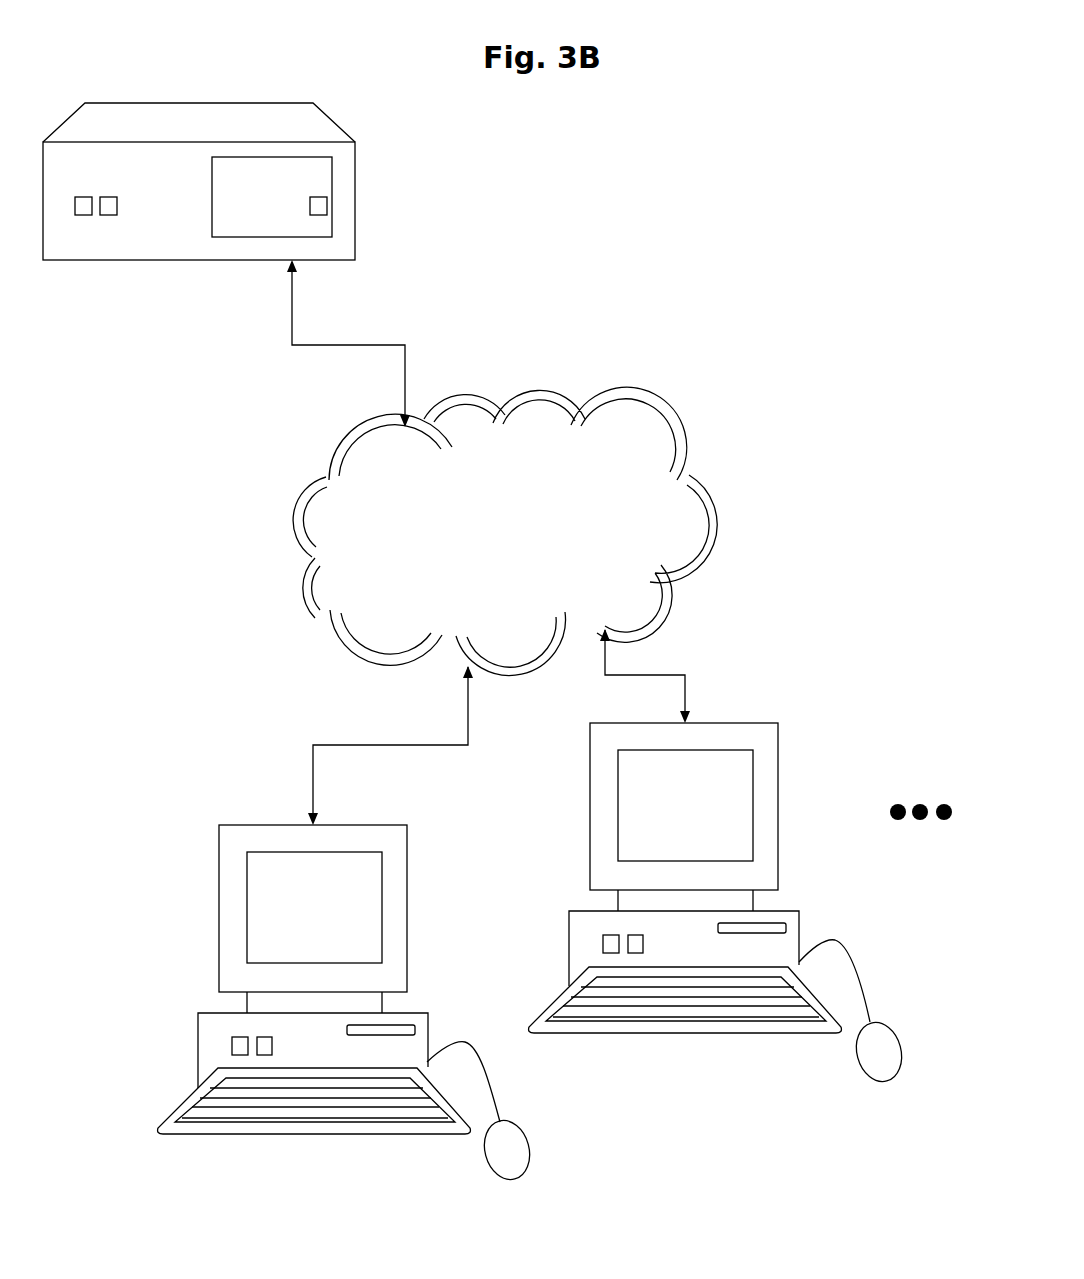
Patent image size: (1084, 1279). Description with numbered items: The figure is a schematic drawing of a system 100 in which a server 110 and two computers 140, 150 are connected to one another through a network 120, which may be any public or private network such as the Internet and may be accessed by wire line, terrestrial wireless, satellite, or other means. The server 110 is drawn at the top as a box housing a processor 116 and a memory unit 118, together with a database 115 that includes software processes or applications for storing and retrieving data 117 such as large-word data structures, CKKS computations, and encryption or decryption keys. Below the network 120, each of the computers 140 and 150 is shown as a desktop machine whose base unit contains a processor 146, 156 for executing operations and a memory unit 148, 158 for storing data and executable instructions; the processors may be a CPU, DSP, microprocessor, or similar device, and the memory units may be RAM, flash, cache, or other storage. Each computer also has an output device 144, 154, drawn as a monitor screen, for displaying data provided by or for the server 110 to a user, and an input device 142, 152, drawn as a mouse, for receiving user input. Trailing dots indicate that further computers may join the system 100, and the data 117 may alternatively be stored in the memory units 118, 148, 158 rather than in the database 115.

The system 100 is at (794, 262).
The server 110 is at (218, 132).
The database 115 is at (275, 200).
The processor 116 is at (83, 215).
The data 117 is at (318, 215).
The memory unit 118 is at (108, 196).
The network 120 is at (505, 531).
The computer 140 is at (273, 822).
The input device 142 is at (520, 1120).
The output device 144 is at (309, 905).
The processor 146 is at (232, 1045).
The memory unit 148 is at (252, 1037).
The computer 150 is at (768, 723).
The input device 152 is at (890, 1025).
The output device 154 is at (681, 803).
The processor 156 is at (603, 943).
The memory unit 158 is at (623, 935).